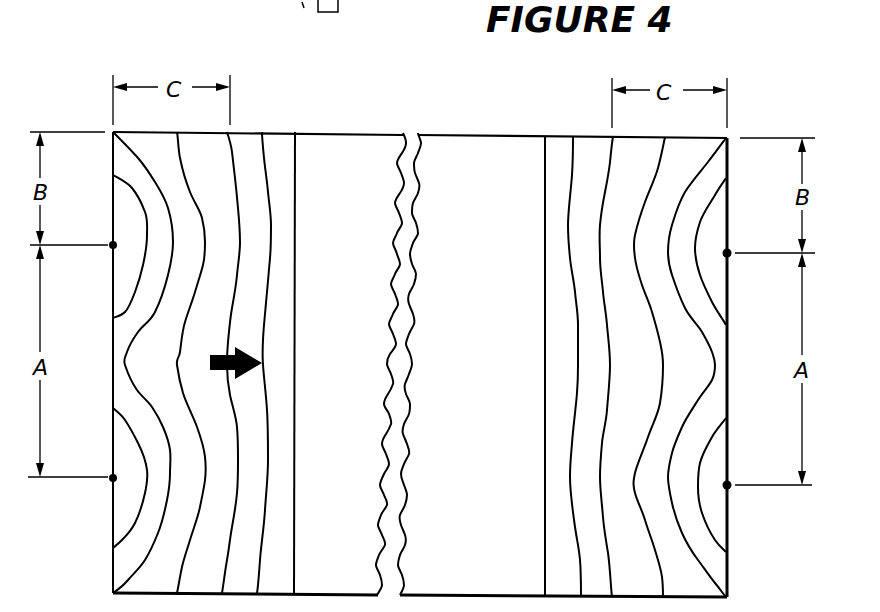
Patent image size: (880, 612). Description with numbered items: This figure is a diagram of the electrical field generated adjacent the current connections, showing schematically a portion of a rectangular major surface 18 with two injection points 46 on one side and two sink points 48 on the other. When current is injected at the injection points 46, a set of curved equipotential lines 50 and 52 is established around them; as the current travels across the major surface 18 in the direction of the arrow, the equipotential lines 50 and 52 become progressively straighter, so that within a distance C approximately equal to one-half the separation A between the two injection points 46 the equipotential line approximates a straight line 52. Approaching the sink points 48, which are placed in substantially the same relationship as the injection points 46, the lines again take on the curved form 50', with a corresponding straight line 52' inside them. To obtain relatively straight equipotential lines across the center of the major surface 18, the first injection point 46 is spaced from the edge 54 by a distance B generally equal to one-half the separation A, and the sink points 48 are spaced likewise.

The major surface 18 is at (447, 381).
The injection points 46 is at (111, 243).
The sink points 48 is at (729, 251).
The curved equipotential lines 50 is at (143, 347).
The curved equipotential lines 50' is at (697, 349).
The straight equipotential line 52 is at (258, 341).
The straight equipotential line 52' is at (586, 343).
The edge 54 is at (353, 133).